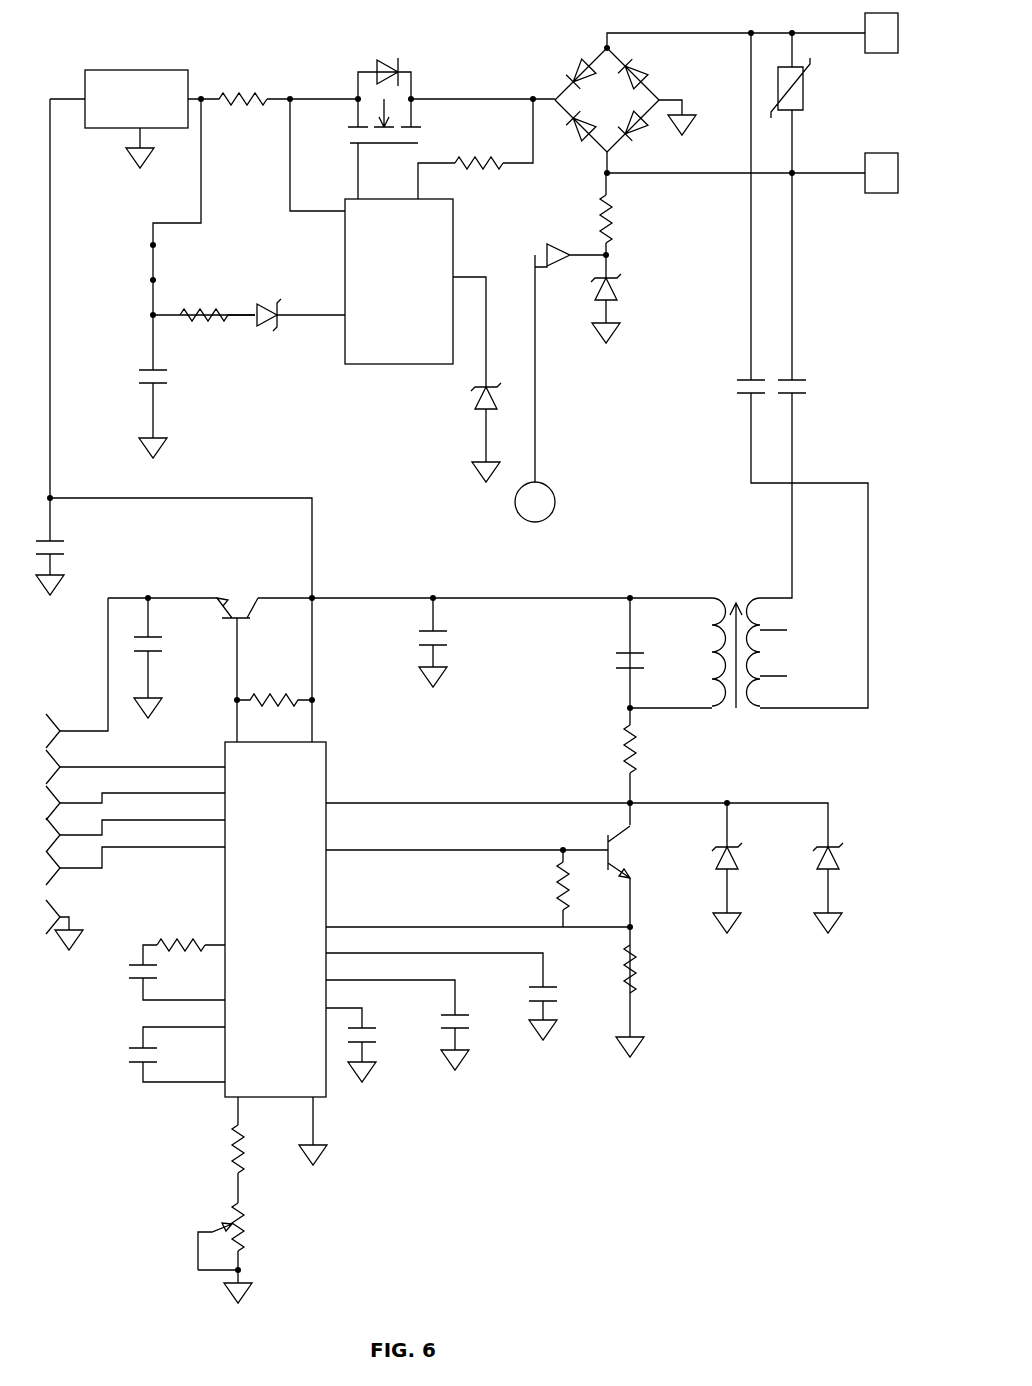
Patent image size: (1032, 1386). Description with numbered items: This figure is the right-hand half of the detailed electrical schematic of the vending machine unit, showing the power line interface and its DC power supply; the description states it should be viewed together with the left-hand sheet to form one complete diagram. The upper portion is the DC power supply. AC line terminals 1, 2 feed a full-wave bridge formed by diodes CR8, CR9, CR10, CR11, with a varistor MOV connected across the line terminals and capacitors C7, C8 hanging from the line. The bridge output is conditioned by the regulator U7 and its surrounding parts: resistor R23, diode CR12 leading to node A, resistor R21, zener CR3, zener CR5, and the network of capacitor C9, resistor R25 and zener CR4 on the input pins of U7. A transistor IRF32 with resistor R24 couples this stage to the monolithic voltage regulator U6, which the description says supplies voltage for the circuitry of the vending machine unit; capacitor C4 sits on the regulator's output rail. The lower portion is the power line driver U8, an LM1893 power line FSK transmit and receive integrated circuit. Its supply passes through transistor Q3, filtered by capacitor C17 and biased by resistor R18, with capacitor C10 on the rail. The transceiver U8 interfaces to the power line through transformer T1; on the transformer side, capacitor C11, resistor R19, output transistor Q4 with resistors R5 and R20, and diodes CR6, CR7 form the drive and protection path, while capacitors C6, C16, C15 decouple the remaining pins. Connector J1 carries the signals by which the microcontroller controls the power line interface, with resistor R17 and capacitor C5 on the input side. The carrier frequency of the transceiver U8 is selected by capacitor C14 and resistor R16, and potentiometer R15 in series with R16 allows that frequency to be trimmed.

The monolithic voltage regulator U6 is at (136, 83).
The 0.5 ohm 2W resistor R24 is at (234, 87).
The IRF32 power MOSFET IRF32 is at (382, 87).
The bridge rectifier diode IN4003 CR8 is at (565, 73).
The bridge rectifier diode IN4003 CR9 is at (653, 74).
The bridge rectifier diode IN4003 CR10 is at (579, 142).
The bridge rectifier diode IN4003 CR11 is at (621, 86).
The AC line terminal 1 is at (881, 33).
The AC line terminal 2 is at (881, 173).
The metal oxide varistor MOV is at (818, 75).
The 820 ohm 0.5W resistor R23 is at (475, 153).
The HV2405E off-line regulator U7 is at (400, 271).
The diode IN4003 CR12 is at (542, 230).
The node A connection A is at (535, 502).
The 150K resistor R21 is at (633, 217).
The zener diode IN5231B CR3 is at (652, 293).
The zener diode IN5035 CR5 is at (446, 407).
The 1000uF 50V capacitor C9 is at (115, 369).
The 470 ohm 0.5W resistor R25 is at (217, 357).
The zener diode IN4743 CR4 is at (271, 346).
The 0.47uF 250V capacitor C7 is at (721, 390).
The 0.47uF 250V capacitor C8 is at (823, 390).
The 0.1uF capacitor C4 is at (75, 549).
The 2222 transistor Q3 is at (242, 578).
The 100uF 16V capacitor C17 is at (183, 655).
The 12K resistor R18 is at (274, 673).
The 220uF 50V capacitor C10 is at (468, 649).
The 0.033uF 100V film capacitor C11 is at (605, 665).
The transformer T1 is at (735, 665).
The 4.7 ohm resistor R19 is at (600, 753).
The TIP31 transistor Q4 is at (654, 854).
The 180 ohm resistor R5 is at (540, 890).
The 6.2 ohm resistor R20 is at (660, 968).
The diode IN5819 CR6 is at (762, 870).
The zener diode IN5368 CR7 is at (866, 870).
The 0.047uF capacitor C6 is at (566, 994).
The 10uF capacitor C16 is at (482, 1021).
The 0.22uF capacitor C15 is at (384, 1034).
The power line driver U8 is at (273, 921).
The connector J1 is at (62, 801).
The 3.3K resistor R17 is at (167, 917).
The 0.047uF capacitor C5 is at (119, 973).
The carrier frequency selection capacitor C14 is at (111, 1057).
The carrier frequency selection resistor R16 is at (210, 1150).
The 2K potentiometer R15 is at (250, 1240).